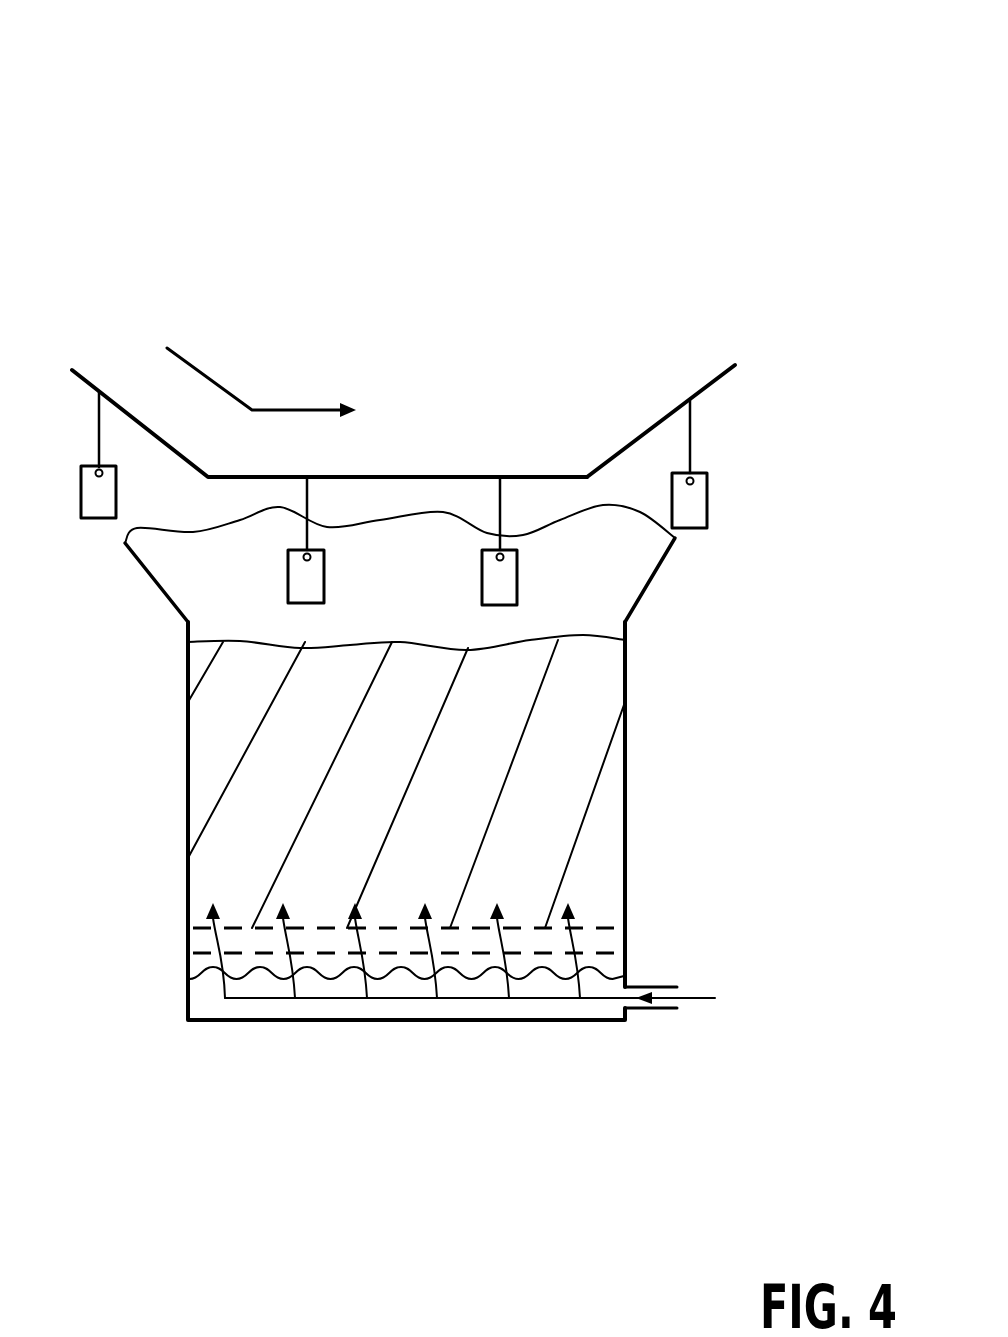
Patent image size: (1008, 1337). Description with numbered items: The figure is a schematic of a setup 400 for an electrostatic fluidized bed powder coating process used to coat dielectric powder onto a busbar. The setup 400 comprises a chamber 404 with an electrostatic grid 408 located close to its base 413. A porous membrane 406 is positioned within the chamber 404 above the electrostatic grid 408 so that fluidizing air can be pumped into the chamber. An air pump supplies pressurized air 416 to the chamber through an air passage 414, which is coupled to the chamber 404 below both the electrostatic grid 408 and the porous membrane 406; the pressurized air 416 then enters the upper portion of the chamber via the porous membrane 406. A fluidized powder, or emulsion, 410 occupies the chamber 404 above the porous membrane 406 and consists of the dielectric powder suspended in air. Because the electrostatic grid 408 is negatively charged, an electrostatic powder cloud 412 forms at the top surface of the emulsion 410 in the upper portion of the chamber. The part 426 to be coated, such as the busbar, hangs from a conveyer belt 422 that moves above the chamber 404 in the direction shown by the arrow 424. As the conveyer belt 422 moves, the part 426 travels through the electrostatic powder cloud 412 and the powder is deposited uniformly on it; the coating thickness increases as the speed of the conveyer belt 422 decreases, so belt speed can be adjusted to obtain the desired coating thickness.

The setup 400 is at (751, 64).
The chamber 404 is at (625, 780).
The porous membrane 406 is at (200, 928).
The electrostatic grid 408 is at (203, 975).
The fluidized powder 410 is at (203, 799).
The electrostatic powder cloud 412 is at (618, 567).
The base 413 is at (515, 1020).
The air passage 414 is at (650, 987).
The pressurized air 416 is at (347, 998).
The conveyer belt 422 is at (715, 385).
The arrow 424 is at (187, 360).
The part 426 is at (80, 483).